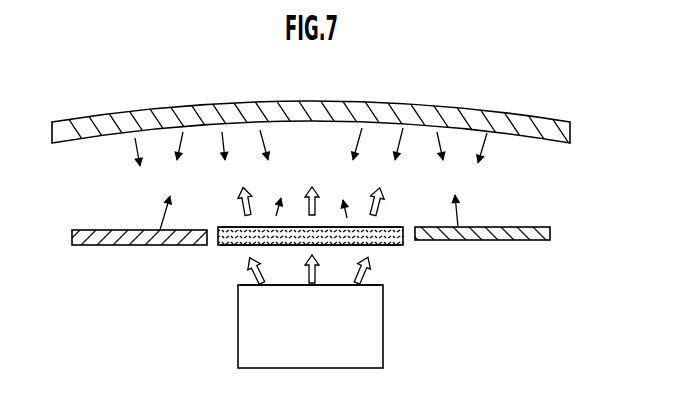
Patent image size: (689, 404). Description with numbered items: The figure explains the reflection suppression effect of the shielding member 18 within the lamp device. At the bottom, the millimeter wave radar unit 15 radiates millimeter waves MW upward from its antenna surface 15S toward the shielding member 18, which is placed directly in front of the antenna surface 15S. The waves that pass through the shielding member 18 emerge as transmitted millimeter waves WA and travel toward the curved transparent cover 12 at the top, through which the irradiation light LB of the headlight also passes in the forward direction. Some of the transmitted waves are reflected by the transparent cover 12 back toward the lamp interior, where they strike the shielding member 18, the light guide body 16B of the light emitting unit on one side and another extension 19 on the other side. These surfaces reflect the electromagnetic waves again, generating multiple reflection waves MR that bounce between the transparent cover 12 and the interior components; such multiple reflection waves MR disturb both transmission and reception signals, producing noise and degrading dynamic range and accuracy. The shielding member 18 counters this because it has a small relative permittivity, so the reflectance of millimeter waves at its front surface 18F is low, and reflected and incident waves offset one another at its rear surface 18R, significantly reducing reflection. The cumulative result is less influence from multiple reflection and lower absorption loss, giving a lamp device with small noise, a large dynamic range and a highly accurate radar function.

The transparent cover 12 is at (499, 120).
The millimeter wave radar unit 15 is at (385, 345).
The antenna surface 15S is at (238, 285).
The light guide body 16B is at (106, 247).
The shielding member 18 is at (405, 243).
The front surface of the shielding member 18F is at (426, 216).
The rear surface of the shielding member 18R is at (386, 248).
The extension 19 is at (520, 241).
The multiple reflection waves MR is at (313, 179).
The irradiation light LB is at (323, 153).
The transmitted millimeter waves WA is at (295, 201).
The millimeter waves MW is at (308, 270).